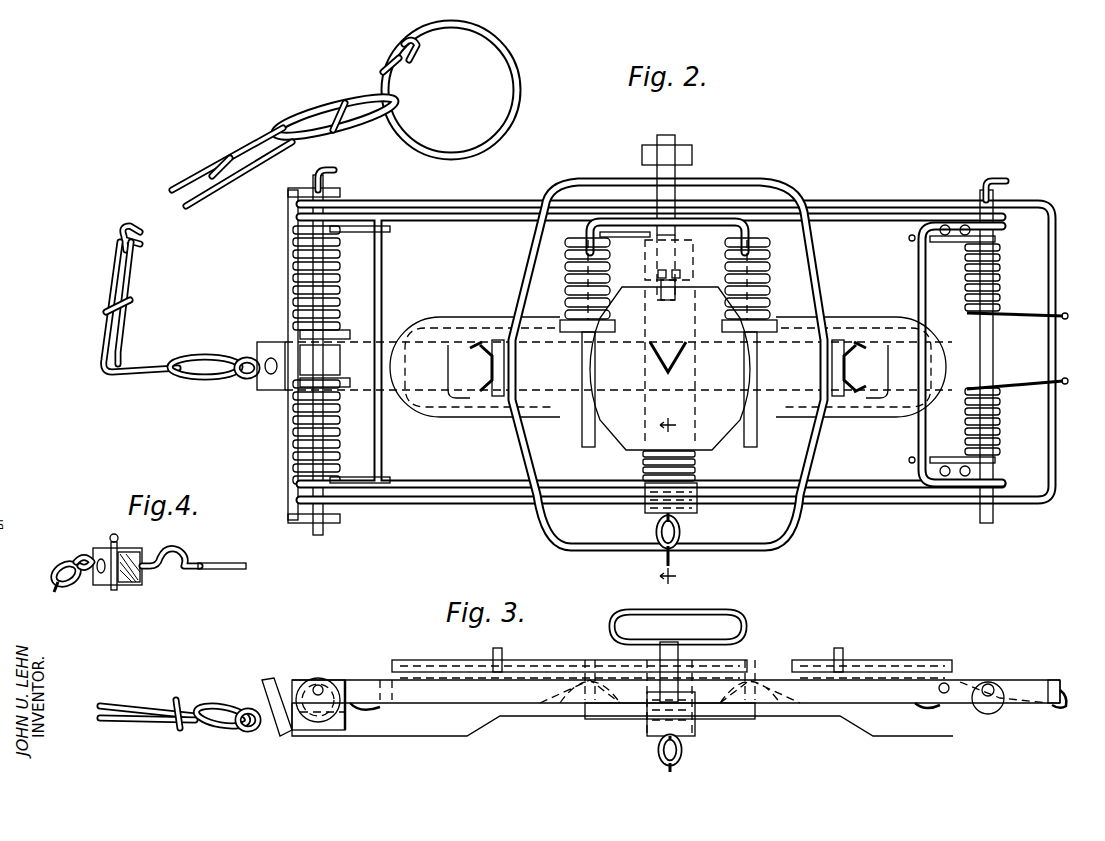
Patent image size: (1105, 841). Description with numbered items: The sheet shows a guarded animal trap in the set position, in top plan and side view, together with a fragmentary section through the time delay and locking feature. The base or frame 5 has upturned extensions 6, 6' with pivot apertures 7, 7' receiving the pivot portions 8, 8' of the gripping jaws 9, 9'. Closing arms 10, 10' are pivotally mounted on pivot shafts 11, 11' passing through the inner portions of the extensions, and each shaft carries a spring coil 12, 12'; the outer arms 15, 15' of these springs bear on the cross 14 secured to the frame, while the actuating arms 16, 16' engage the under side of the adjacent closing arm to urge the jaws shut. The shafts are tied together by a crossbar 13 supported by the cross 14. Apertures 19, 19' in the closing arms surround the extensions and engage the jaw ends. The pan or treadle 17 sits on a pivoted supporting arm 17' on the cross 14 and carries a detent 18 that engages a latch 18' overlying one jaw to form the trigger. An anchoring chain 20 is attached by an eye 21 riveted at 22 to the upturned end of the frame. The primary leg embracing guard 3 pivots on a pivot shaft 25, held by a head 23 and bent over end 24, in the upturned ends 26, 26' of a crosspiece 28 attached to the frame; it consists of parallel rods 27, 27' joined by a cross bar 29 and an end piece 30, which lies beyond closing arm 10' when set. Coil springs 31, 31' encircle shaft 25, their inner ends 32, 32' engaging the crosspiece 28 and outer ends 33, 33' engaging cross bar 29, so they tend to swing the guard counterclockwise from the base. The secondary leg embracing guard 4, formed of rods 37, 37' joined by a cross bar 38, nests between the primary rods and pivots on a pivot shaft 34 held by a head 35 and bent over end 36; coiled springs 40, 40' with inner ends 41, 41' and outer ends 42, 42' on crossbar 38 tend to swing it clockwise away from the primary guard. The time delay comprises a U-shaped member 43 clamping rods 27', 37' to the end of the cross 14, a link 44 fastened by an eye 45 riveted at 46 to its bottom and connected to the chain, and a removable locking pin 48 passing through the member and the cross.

In FIG. 3, the primary leg embracing guard 3 is at (866, 680).
In FIG. 2, the secondary leg embracing guard 4 is at (512, 528).
In FIG. 2, the base or frame 5 is at (356, 352).
In FIG. 3, the base or frame 5 is at (474, 728).
In FIG. 2, the upturned extension 6 is at (503, 368).
In FIG. 3, the upturned extension 6 is at (504, 652).
In FIG. 2, the upturned extension 6' is at (843, 368).
In FIG. 3, the upturned extension 6' is at (843, 649).
In FIG. 2, the pivot aperture 7 is at (481, 368).
In FIG. 2, the pivot aperture 7' is at (857, 368).
In FIG. 2, the pivot portion 8 is at (466, 357).
In FIG. 2, the pivot portion 8' is at (852, 366).
In FIG. 2, the gripping jaw 9 is at (668, 354).
In FIG. 2, the gripping jaw 9' is at (745, 561).
In FIG. 2, the closing arm 10 is at (475, 377).
In FIG. 3, the closing arm 10 is at (569, 657).
In FIG. 2, the closing arm 10' is at (861, 377).
In FIG. 3, the closing arm 10' is at (872, 653).
In FIG. 2, the pivot shaft 11 is at (575, 389).
In FIG. 3, the pivot shaft 11 is at (594, 666).
In FIG. 2, the pivot shaft 11' is at (764, 389).
In FIG. 3, the pivot shaft 11' is at (755, 666).
In FIG. 2, the spring coil 12 is at (574, 278).
In FIG. 3, the spring coil 12 is at (580, 711).
In FIG. 2, the spring coil 12' is at (763, 278).
In FIG. 3, the spring coil 12' is at (760, 710).
In FIG. 2, the crossbar 13 is at (722, 220).
In FIG. 3, the crossbar 13 is at (748, 720).
In FIG. 2, the cross 14 is at (688, 158).
In FIG. 3, the cross 14 is at (669, 662).
In FIG. 4, the cross 14 is at (212, 569).
In FIG. 2, the spring arm 15 is at (610, 280).
In FIG. 2, the spring arm 15' is at (723, 280).
In FIG. 2, the actuating arm 16 is at (576, 314).
In FIG. 2, the actuating arm 16' is at (761, 314).
In FIG. 2, the pan or treadle 17 is at (670, 370).
In FIG. 3, the pan or treadle 17 is at (678, 621).
In FIG. 2, the pivoted supporting arm 17' is at (692, 295).
In FIG. 2, the detent 18 is at (660, 242).
In FIG. 2, the latch 18' is at (695, 220).
In FIG. 2, the aperture 19 is at (456, 391).
In FIG. 2, the aperture 19' is at (878, 402).
In FIG. 2, the chain 20 is at (204, 376).
In FIG. 3, the chain 20 is at (178, 728).
In FIG. 2, the eye 21 is at (246, 377).
In FIG. 3, the eye 21 is at (252, 727).
In FIG. 2, the rivet 22 is at (272, 376).
In FIG. 3, the rivet 22 is at (282, 680).
In FIG. 2, the head 23 is at (323, 533).
In FIG. 3, the head 23 is at (318, 684).
In FIG. 2, the bent over end 24 is at (332, 178).
In FIG. 2, the pivot shaft 25 is at (322, 368).
In FIG. 2, the upwardly turned end 26 is at (314, 180).
In FIG. 2, the upwardly turned end 26' is at (312, 533).
In FIG. 2, the rod 27 is at (676, 336).
In FIG. 2, the rod 27' is at (910, 515).
In FIG. 3, the rod 27' is at (368, 668).
In FIG. 4, the rod 27' is at (132, 581).
In FIG. 2, the crosspiece 28 is at (292, 330).
In FIG. 2, the cross bar 29 is at (382, 455).
In FIG. 3, the cross bar 29 is at (386, 680).
In FIG. 2, the end piece 30 is at (1054, 430).
In FIG. 3, the end piece 30 is at (1060, 681).
In FIG. 2, the coil spring 31 is at (296, 278).
In FIG. 3, the coil spring 31 is at (325, 681).
In FIG. 2, the coil spring 31' is at (298, 432).
In FIG. 2, the inner end 32 is at (333, 320).
In FIG. 2, the inner end 32' is at (336, 399).
In FIG. 3, the inner end 32' is at (360, 719).
In FIG. 2, the outer end 33 is at (360, 240).
In FIG. 2, the outer end 33' is at (360, 468).
In FIG. 3, the outer end 33' is at (369, 717).
In FIG. 2, the pivot shaft 34 is at (993, 350).
In FIG. 2, the head 35 is at (993, 518).
In FIG. 3, the head 35 is at (990, 684).
In FIG. 2, the bent over end 36 is at (1006, 184).
In FIG. 2, the rod 37 is at (910, 194).
In FIG. 2, the rod 37' is at (860, 507).
In FIG. 4, the rod 37' is at (162, 577).
In FIG. 2, the cross bar 38 is at (923, 295).
In FIG. 2, the coiled spring 40 is at (996, 277).
In FIG. 2, the coiled spring 40' is at (998, 421).
In FIG. 3, the coiled spring 40' is at (1004, 710).
In FIG. 2, the inner end 41 is at (1017, 304).
In FIG. 2, the inner end 41' is at (1017, 377).
In FIG. 3, the inner end 41' is at (1075, 700).
In FIG. 2, the outer end 42 is at (952, 244).
In FIG. 2, the outer end 42' is at (952, 454).
In FIG. 3, the outer end 42' is at (940, 703).
In FIG. 2, the U-shaped member 43 is at (646, 510).
In FIG. 3, the U-shaped member 43 is at (694, 728).
In FIG. 4, the U-shaped member 43 is at (96, 585).
In FIG. 2, the link 44 is at (678, 532).
In FIG. 3, the link 44 is at (678, 758).
In FIG. 4, the link 44 is at (58, 572).
In FIG. 4, the eye 45 is at (80, 558).
In FIG. 4, the rivet 46 is at (111, 540).
In FIG. 4, the locking pin 48 is at (124, 550).